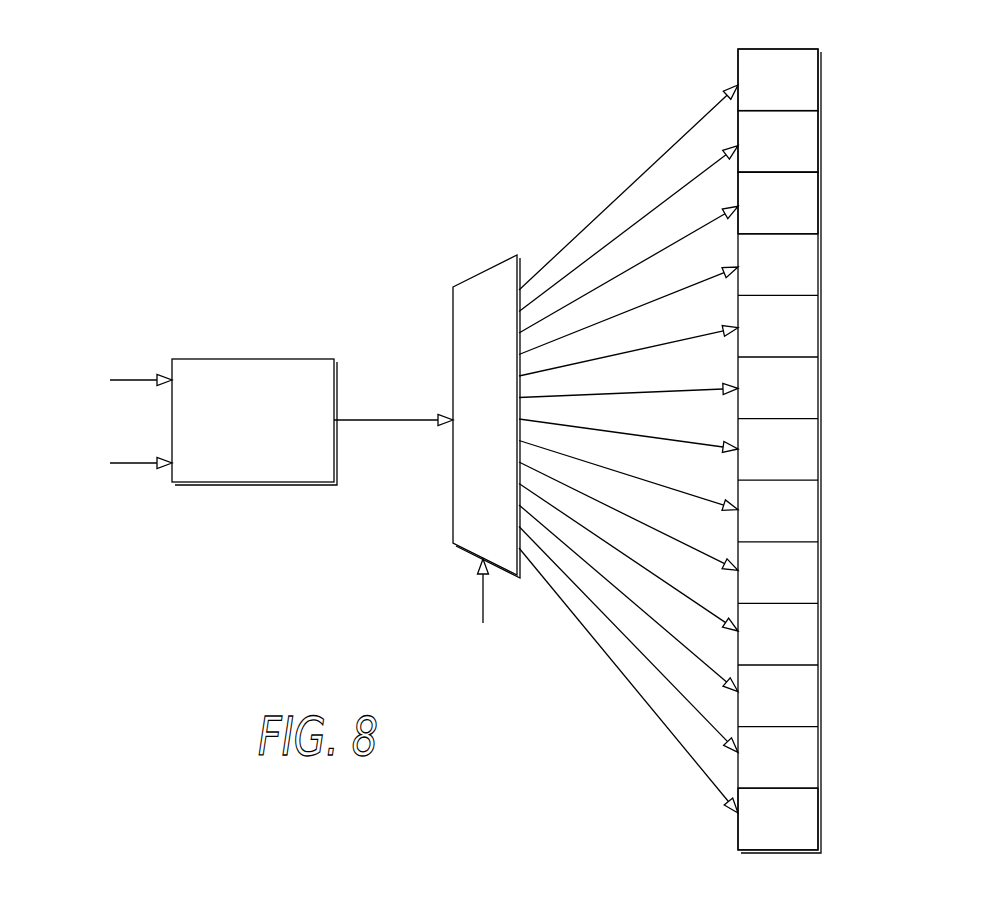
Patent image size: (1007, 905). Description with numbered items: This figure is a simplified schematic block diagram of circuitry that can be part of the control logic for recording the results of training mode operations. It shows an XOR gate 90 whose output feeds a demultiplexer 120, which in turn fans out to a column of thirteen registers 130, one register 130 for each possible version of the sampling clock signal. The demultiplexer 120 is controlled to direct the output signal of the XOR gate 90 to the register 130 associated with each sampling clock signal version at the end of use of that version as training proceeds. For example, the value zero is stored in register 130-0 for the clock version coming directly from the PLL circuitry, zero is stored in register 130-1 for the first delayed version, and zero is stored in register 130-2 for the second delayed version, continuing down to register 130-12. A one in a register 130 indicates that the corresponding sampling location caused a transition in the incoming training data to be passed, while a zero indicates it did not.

The XOR gate 90 is at (255, 358).
The demultiplexer 120 is at (478, 274).
The register 130 is at (670, 451).
The register 130-0 is at (822, 85).
The register 130-1 is at (822, 143).
The register 130-2 is at (822, 208).
The register 130-12 is at (822, 820).